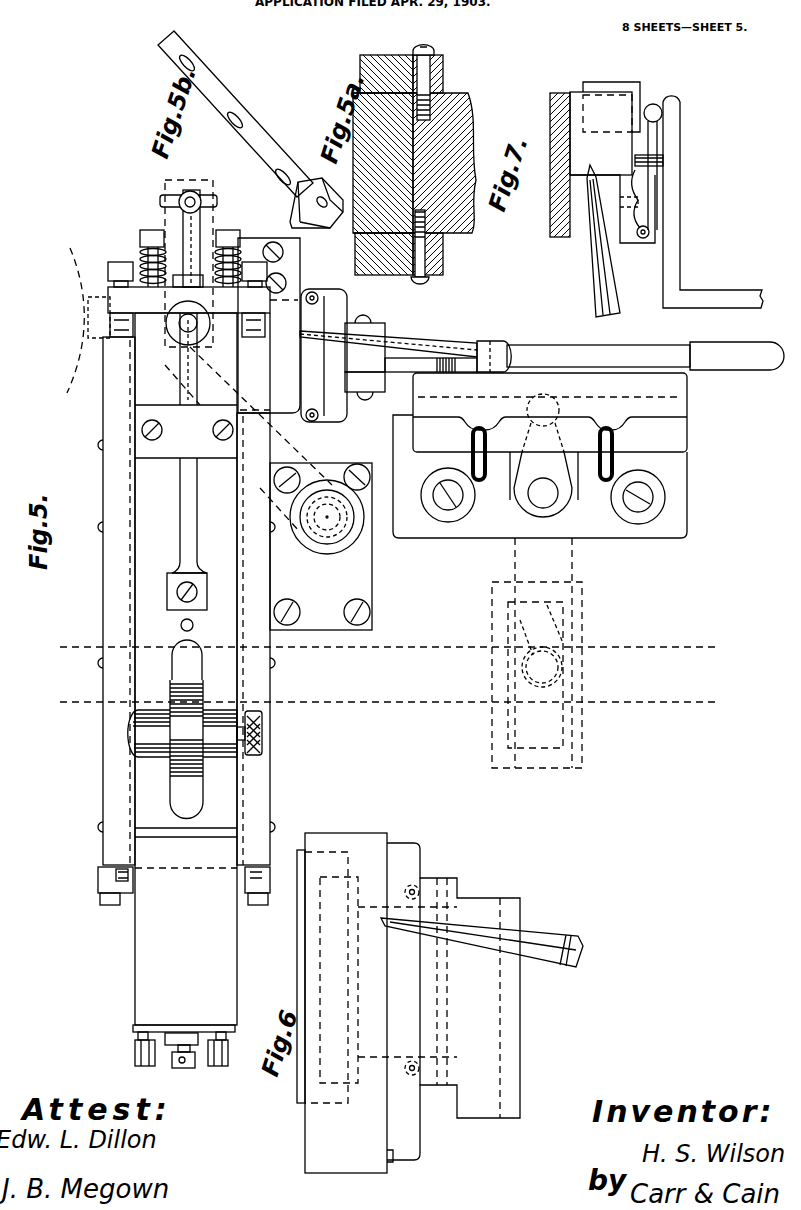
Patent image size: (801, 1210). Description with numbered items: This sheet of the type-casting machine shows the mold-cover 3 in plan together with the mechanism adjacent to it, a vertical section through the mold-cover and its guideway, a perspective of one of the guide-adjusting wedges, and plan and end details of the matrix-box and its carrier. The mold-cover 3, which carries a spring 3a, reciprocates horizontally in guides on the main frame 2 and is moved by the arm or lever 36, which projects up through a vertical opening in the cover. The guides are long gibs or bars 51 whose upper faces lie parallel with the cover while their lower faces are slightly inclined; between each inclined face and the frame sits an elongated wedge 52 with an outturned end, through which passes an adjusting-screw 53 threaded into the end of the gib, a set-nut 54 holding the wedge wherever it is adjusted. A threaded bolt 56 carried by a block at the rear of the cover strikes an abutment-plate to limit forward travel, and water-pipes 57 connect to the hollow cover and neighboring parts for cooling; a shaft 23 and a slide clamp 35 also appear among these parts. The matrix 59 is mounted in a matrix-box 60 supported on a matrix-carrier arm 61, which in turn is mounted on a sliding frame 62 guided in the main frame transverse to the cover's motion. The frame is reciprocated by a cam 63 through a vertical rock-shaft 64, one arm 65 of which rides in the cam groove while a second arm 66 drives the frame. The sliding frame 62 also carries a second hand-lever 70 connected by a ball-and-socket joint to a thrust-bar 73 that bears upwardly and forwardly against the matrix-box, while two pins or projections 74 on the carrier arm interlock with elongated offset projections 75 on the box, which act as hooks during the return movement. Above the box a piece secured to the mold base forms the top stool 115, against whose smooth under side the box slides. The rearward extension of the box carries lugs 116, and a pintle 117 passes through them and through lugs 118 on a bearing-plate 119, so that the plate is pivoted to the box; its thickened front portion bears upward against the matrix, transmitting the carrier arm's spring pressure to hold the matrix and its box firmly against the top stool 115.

In FIG. 5A, the main frame 2 is at (425, 161).
In FIG. 5, the mold-cover 3 is at (185, 672).
In FIG. 5A, the mold-cover 3 is at (375, 163).
In FIG. 5, the spring 3a is at (180, 505).
In FIG. 5, the shaft 23 is at (390, 674).
In FIG. 5, the slide clamp 35 is at (187, 660).
In FIG. 5, the arm or lever 36 is at (186, 328).
In FIG. 5, the gibs or bars 51 is at (186, 601).
In FIG. 5A, the gibs or bars 51 is at (391, 175).
In FIG. 5, the wedge 52 is at (184, 880).
In FIG. 5A, the wedge 52 is at (445, 164).
In FIG. 5B, the wedge 52 is at (220, 128).
In FIG. 5, the adjusting-screw 53 is at (116, 878).
In FIG. 5, the set-nut 54 is at (105, 882).
In FIG. 5, the threaded bolt 56 is at (180, 1062).
In FIG. 5, the water-pipes 57 is at (135, 1050).
In FIG. 7, the matrix 59 is at (640, 84).
In FIG. 6, the matrix 59 is at (301, 950).
In FIG. 7, the matrix-box 60 is at (601, 133).
In FIG. 6, the matrix-box 60 is at (346, 1003).
In FIG. 7, the matrix-carrier arm 61 is at (673, 258).
In FIG. 6, the matrix-carrier arm 61 is at (439, 1002).
In FIG. 5, the sliding frame 62 is at (540, 455).
In FIG. 5, the cam 63 is at (543, 653).
In FIG. 5, the rock-shaft 64 is at (543, 493).
In FIG. 5, the arm 65 is at (537, 663).
In FIG. 5, the second arm 66 is at (543, 455).
In FIG. 5, the second hand-lever 70 is at (652, 343).
In FIG. 5, the thrust-bar 73 is at (390, 336).
In FIG. 7, the thrust-bar 73 is at (596, 272).
In FIG. 6, the thrust-bar 73 is at (540, 958).
In FIG. 5, the pins or projections 74 is at (312, 292).
In FIG. 7, the pins or projections 74 is at (650, 163).
In FIG. 5, the elongated offset projections 75 is at (324, 292).
In FIG. 7, the top stool 115 is at (557, 110).
In FIG. 7, the lugs 116 is at (623, 243).
In FIG. 7, the pintle 117 is at (644, 240).
In FIG. 7, the lugs 118 is at (658, 233).
In FIG. 7, the bearing-plate 119 is at (654, 141).